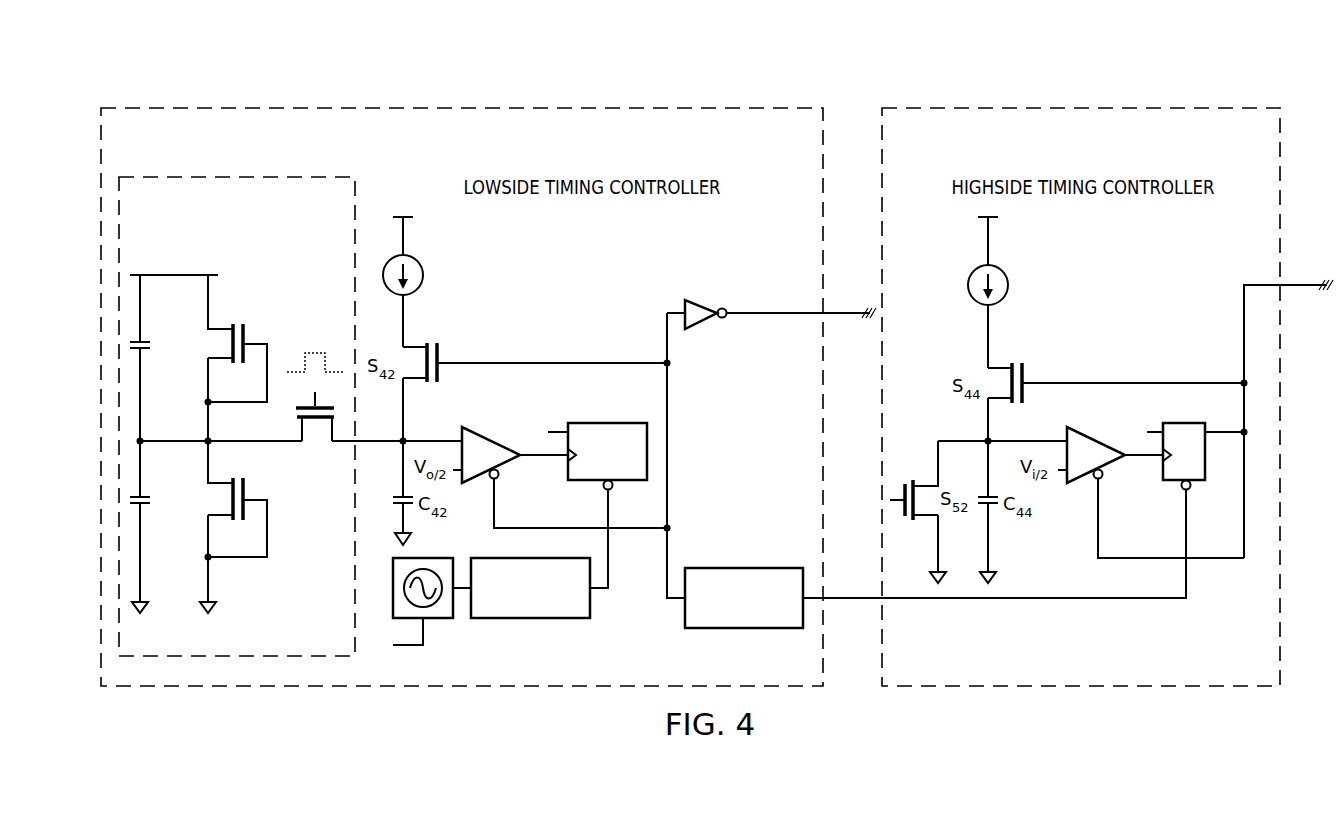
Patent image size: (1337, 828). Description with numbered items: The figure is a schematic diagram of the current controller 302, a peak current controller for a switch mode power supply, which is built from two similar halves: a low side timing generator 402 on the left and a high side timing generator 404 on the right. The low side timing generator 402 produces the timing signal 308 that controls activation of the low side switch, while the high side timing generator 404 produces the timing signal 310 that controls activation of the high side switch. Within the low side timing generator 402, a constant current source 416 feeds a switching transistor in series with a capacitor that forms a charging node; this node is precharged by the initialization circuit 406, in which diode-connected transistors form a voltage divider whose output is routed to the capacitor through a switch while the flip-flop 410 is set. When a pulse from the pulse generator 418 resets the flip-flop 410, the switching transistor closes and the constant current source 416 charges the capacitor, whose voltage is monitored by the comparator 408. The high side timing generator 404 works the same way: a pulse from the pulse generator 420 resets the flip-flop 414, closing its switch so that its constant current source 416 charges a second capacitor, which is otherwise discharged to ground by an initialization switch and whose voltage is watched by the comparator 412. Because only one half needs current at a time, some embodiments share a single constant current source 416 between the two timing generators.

The current controller 302 is at (690, 352).
The low side timing generator 402 is at (352, 106).
The high side timing generator 404 is at (1214, 105).
The initialization circuit 406 is at (212, 170).
The comparator 408 is at (489, 433).
The flip-flop 410 is at (609, 422).
The comparator 412 is at (1096, 434).
The flip-flop 414 is at (1194, 486).
The constant current source 416 is at (423, 274).
The pulse generator 418 is at (590, 611).
The pulse generator 420 is at (756, 568).
The timing signal 308 is at (840, 313).
The timing signal 310 is at (1299, 285).